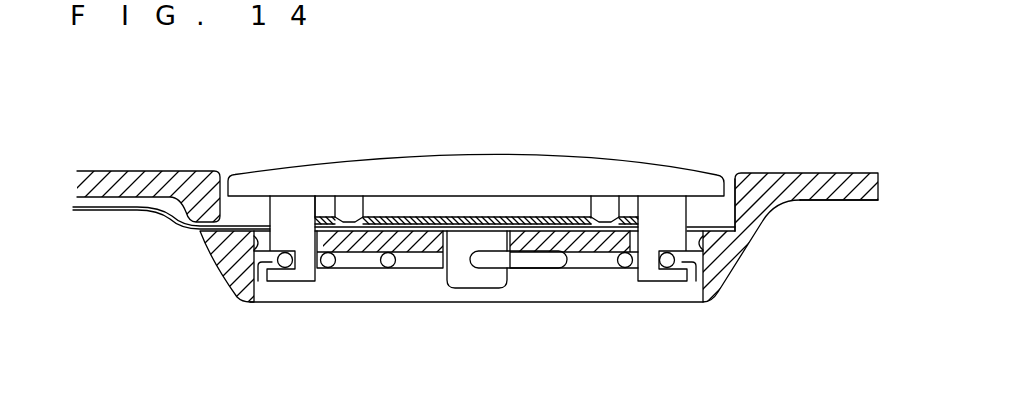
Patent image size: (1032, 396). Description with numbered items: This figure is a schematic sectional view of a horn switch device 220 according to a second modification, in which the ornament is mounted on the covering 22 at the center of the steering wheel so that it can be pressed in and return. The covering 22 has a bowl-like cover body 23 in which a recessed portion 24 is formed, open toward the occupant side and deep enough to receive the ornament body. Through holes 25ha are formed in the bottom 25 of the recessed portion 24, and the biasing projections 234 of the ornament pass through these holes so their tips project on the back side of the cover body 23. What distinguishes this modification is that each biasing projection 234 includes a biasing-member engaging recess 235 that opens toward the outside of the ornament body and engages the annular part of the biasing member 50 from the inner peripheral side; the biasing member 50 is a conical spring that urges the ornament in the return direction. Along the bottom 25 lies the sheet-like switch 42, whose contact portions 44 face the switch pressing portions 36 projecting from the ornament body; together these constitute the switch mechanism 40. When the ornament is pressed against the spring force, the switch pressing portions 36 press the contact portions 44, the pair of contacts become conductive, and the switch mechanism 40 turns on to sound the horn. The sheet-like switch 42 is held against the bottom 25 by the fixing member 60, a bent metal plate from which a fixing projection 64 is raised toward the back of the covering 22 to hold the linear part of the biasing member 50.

The horn switch device 220 is at (540, 86).
The covering 22 is at (798, 173).
The cover body 23 is at (815, 200).
The recessed portion 24 is at (731, 183).
The bottom 25 is at (757, 243).
The through hole 25ha is at (247, 242).
The switch pressing portion 36 is at (358, 214).
The switch mechanism 40 is at (327, 202).
The sheet-like switch 42 is at (424, 216).
The contact portion 44 is at (372, 265).
The biasing member 50 is at (533, 283).
The fixing member 60 is at (552, 203).
The fixing projection 64 is at (475, 289).
The biasing projection 234 is at (303, 283).
The biasing-member engaging recess 235 is at (261, 284).